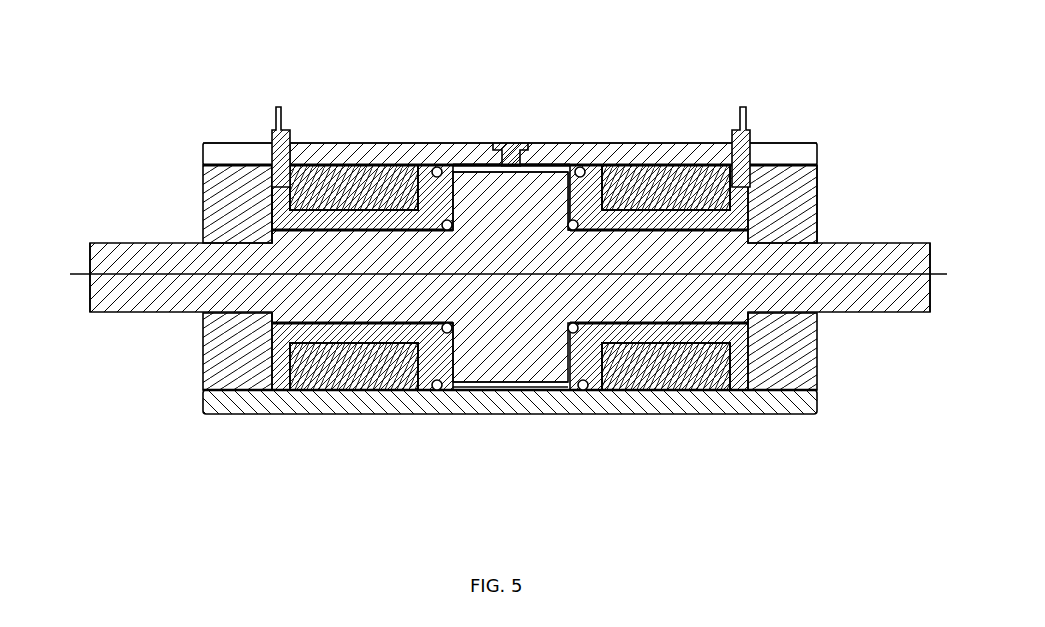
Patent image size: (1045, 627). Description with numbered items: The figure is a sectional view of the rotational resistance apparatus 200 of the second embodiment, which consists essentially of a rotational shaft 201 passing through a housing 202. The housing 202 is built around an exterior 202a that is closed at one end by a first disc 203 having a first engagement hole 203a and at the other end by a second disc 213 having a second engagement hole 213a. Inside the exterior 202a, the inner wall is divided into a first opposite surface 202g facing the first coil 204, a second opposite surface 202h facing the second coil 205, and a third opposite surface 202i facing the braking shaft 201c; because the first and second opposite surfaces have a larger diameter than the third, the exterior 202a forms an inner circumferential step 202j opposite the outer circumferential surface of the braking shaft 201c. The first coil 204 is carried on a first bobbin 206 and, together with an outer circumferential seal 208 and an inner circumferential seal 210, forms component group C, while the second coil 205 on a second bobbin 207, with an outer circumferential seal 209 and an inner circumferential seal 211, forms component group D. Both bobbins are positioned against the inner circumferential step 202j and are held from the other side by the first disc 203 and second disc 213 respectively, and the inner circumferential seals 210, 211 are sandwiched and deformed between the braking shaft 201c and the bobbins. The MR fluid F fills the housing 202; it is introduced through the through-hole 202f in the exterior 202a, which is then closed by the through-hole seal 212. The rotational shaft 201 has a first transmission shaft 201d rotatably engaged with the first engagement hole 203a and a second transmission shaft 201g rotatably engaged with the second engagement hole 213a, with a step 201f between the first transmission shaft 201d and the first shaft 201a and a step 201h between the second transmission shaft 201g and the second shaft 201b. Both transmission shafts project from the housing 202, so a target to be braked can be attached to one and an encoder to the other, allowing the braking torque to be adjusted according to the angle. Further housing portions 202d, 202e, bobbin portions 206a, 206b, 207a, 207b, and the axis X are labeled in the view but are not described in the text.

The rotational resistance apparatus 200 is at (203, 410).
The rotational shaft 201 is at (160, 243).
The first shaft 201a is at (350, 228).
The second shaft 201b is at (672, 228).
The braking shaft 201c is at (468, 170).
The first transmission shaft 201d is at (102, 243).
The step 201f is at (272, 313).
The second transmission shaft 201g is at (832, 242).
The step 201h is at (748, 315).
The housing 202 is at (600, 162).
The exterior 202a is at (303, 147).
The left housing flange 202d is at (237, 150).
The right housing flange 202e is at (760, 150).
The through-hole 202f is at (480, 163).
The first opposite surface 202g is at (383, 160).
The second opposite surface 202h is at (640, 164).
The third opposite surface 202i is at (542, 167).
The inner circumferential step 202j is at (510, 387).
The first disc 203 is at (212, 175).
The first engagement hole 203a is at (223, 240).
The first coil 204 is at (330, 365).
The second coil 205 is at (713, 363).
The first bobbin 206 is at (297, 330).
The first stator core inner face 206a is at (430, 347).
The first terminal pin 206b is at (270, 128).
The second bobbin 207 is at (715, 330).
The second stator core inner face 207a is at (577, 342).
The second terminal pin 207b is at (730, 132).
The outer circumferential seal 208 is at (437, 390).
The outer circumferential seal 209 is at (573, 333).
The inner circumferential seal 210 is at (450, 333).
The inner circumferential seal 211 is at (583, 390).
The through-hole seal 212 is at (513, 141).
The second disc 213 is at (800, 207).
The second engagement hole 213a is at (814, 238).
The rotation axis X is at (499, 275).
The MR fluid F is at (559, 170).
The component group C is at (242, 477).
The component group D is at (765, 477).